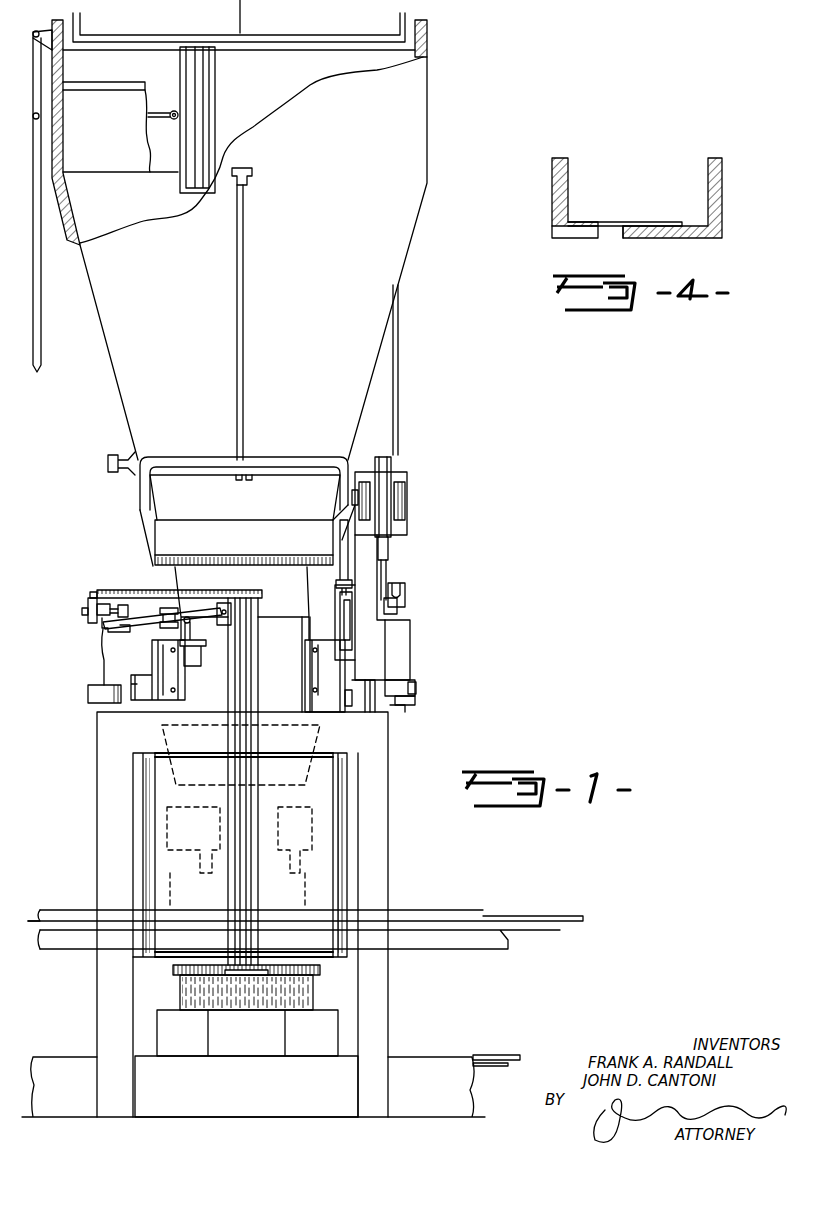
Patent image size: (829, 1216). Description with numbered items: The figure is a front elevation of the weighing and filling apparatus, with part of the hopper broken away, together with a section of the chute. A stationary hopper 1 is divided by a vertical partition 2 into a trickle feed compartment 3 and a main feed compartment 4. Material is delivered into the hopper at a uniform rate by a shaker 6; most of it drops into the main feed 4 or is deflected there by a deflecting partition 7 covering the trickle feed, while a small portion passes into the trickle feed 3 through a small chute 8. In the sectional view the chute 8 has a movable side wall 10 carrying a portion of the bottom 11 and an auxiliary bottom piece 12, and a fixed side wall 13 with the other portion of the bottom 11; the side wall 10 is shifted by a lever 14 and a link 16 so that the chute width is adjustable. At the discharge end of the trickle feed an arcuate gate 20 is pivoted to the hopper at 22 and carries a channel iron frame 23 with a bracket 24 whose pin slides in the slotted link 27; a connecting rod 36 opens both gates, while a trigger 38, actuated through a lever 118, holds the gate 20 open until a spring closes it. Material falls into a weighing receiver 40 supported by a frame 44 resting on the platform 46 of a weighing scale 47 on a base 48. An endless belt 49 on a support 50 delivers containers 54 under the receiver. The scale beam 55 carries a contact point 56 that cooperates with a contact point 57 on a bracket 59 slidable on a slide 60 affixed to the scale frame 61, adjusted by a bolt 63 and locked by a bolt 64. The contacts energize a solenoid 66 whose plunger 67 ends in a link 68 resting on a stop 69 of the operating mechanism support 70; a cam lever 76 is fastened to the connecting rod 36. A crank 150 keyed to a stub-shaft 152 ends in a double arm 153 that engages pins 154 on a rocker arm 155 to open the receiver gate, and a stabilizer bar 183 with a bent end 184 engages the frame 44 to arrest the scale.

In FIG. 1, the hopper 1 is at (418, 113).
In FIG. 1, the vertical partition 2 is at (246, 1119).
In FIG. 1, the trickle feed compartment 3 is at (136, 208).
In FIG. 1, the main feed compartment 4 is at (175, 95).
In FIG. 1, the shaker 6 is at (321, 38).
In FIG. 1, the deflecting partition 7 is at (106, 131).
In FIG. 1, the chute 8 is at (215, 117).
In FIG. 4, the chute 8 is at (632, 178).
In FIG. 4, the side wall 10 is at (552, 200).
In FIG. 4, the bottom 11 is at (672, 238).
In FIG. 4, the auxiliary bottom piece 12 is at (652, 221).
In FIG. 4, the side wall 13 is at (722, 203).
In FIG. 1, the lever 14 is at (41, 328).
In FIG. 1, the link 16 is at (160, 122).
In FIG. 1, the arcuate gate 20 is at (256, 546).
In FIG. 1, the pivot 22 is at (108, 463).
In FIG. 1, the channel iron frame 23 is at (305, 460).
In FIG. 1, the bracket 24 is at (244, 480).
In FIG. 1, the link 27 is at (245, 260).
In FIG. 1, the connecting rod 36 is at (400, 385).
In FIG. 1, the trigger 38 is at (350, 498).
In FIG. 1, the weighing receiver 40 is at (294, 675).
In FIG. 1, the frame 44 is at (140, 852).
In FIG. 1, the platform 46 is at (312, 970).
In FIG. 1, the weighing scale 47 is at (257, 1012).
In FIG. 1, the base 48 is at (260, 1093).
In FIG. 1, the endless belt 49 is at (575, 917).
In FIG. 1, the support 50 is at (550, 931).
In FIG. 1, the container 54 is at (320, 882).
In FIG. 1, the beam 55 is at (178, 616).
In FIG. 1, the contact point 56 is at (126, 633).
In FIG. 1, the contact point 57 is at (124, 605).
In FIG. 1, the bracket 59 is at (100, 632).
In FIG. 1, the slide 60 is at (88, 606).
In FIG. 1, the scale frame 61 is at (198, 592).
In FIG. 1, the bolt 63 is at (93, 592).
In FIG. 1, the bolt 64 is at (82, 612).
In FIG. 1, the solenoid 66 is at (408, 503).
In FIG. 1, the plunger 67 is at (390, 542).
In FIG. 1, the link 68 is at (388, 580).
In FIG. 1, the stop 69 is at (398, 608).
In FIG. 1, the operating mechanism support 70 is at (408, 478).
In FIG. 1, the cam lever 76 is at (405, 600).
In FIG. 1, the lever 118 is at (345, 562).
In FIG. 1, the crank 150 is at (415, 703).
In FIG. 1, the stub-shaft 152 is at (418, 690).
In FIG. 1, the double arm 153 is at (400, 713).
In FIG. 1, the pins 154 is at (372, 715).
In FIG. 1, the rocker arm 155 is at (360, 715).
In FIG. 1, the stabilizer bar 183 is at (340, 620).
In FIG. 1, the bent end 184 is at (372, 664).